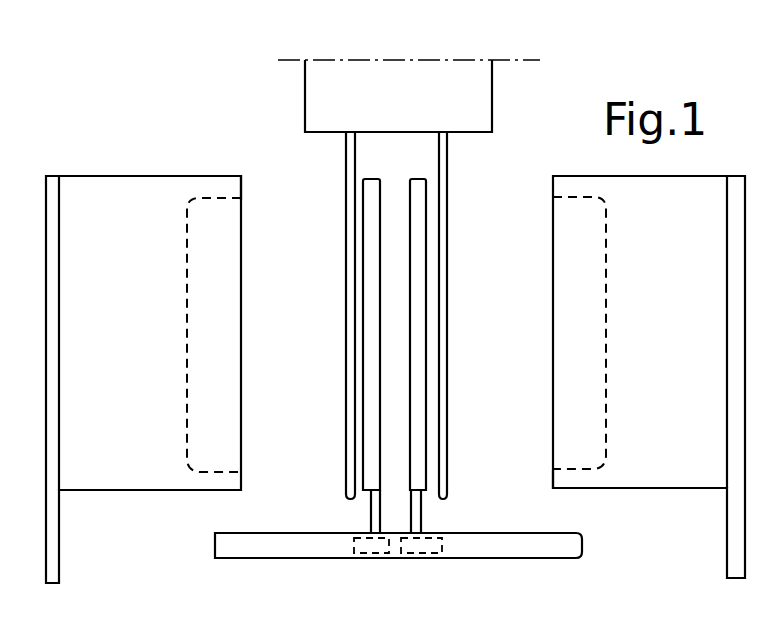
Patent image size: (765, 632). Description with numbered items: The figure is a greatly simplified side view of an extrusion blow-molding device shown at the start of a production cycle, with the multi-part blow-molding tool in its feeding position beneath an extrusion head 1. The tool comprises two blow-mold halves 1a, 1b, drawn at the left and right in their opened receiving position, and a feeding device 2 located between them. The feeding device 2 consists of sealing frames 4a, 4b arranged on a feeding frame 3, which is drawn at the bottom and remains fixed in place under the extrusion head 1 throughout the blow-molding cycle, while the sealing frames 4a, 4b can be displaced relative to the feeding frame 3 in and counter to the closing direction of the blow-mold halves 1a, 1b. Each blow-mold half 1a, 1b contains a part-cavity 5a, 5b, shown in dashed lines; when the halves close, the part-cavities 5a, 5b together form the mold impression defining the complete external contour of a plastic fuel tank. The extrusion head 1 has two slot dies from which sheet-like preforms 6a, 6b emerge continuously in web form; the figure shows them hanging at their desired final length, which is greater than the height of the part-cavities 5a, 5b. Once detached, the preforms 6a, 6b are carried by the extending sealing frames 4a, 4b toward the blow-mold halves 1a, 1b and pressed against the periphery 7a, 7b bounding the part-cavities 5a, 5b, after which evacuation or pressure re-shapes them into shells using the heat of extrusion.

The extrusion head 1 is at (437, 83).
The blow-mold half 1a is at (155, 176).
The blow-mold half 1b is at (607, 176).
The feeding device 2 is at (320, 465).
The feeding frame 3 is at (518, 543).
The sealing frame 4a is at (371, 205).
The sealing frame 4b is at (413, 204).
The part-cavity 5a is at (202, 433).
The part-cavity 5b is at (600, 372).
The preform 6a is at (346, 312).
The preform 6b is at (443, 310).
The periphery 7a is at (236, 179).
The periphery 7b is at (553, 479).